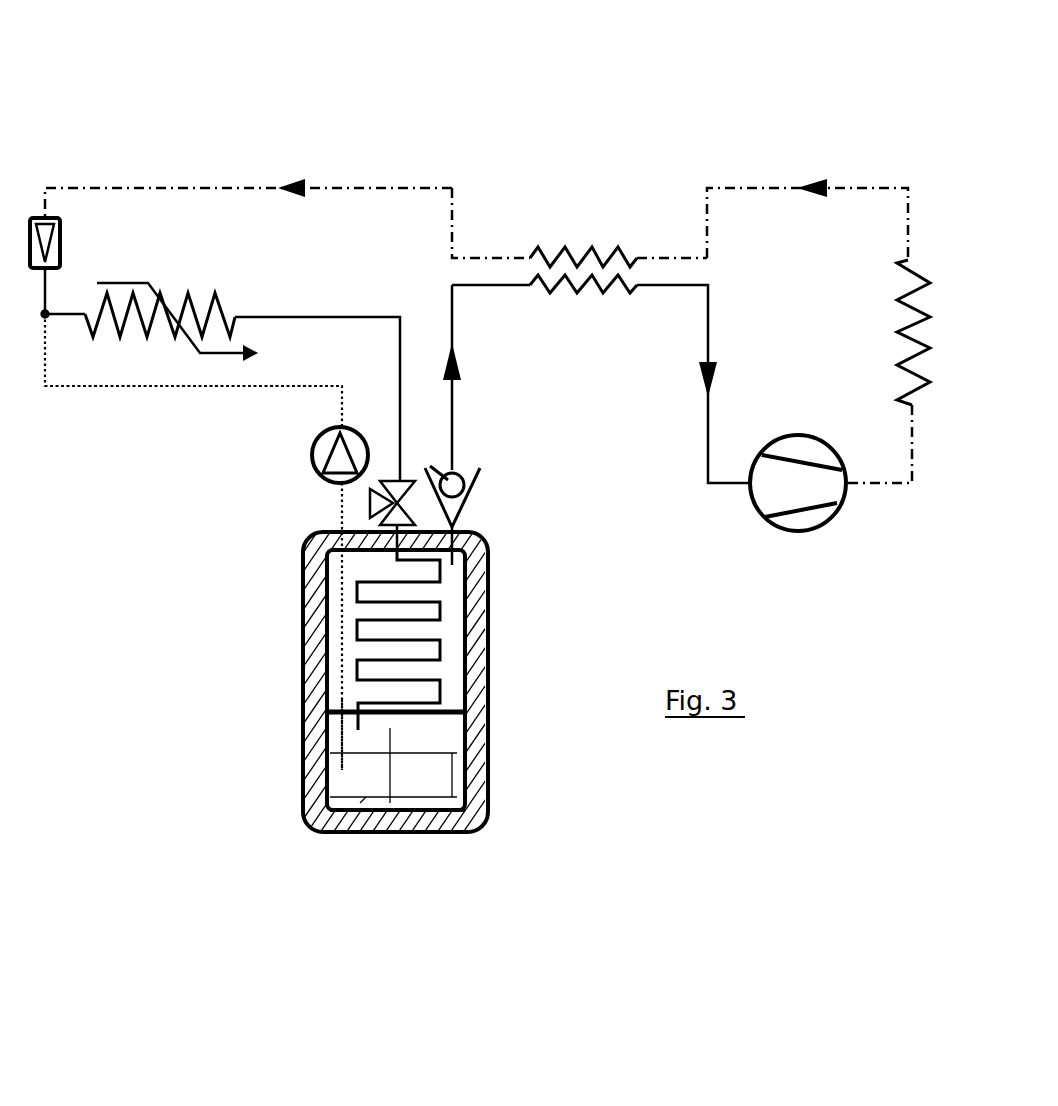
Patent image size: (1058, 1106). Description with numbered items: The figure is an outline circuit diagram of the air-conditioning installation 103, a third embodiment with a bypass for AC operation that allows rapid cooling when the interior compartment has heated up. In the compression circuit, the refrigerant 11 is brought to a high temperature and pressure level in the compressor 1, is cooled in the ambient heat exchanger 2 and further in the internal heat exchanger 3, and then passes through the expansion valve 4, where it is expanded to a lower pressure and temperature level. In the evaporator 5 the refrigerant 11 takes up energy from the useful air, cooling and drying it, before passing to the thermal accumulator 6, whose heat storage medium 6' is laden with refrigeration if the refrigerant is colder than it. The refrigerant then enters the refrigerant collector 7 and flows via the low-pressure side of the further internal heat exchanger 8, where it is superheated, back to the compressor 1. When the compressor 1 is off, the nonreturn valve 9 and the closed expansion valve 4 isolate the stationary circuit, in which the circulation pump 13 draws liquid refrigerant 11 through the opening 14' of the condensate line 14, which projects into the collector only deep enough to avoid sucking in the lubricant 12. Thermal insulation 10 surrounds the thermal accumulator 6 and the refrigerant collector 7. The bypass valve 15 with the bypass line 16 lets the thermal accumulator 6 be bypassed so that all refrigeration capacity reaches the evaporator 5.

The air-conditioning installation 103 is at (817, 95).
The compressor 1 is at (762, 530).
The ambient heat exchanger 2 is at (897, 332).
The internal heat exchanger 3 is at (567, 247).
The expansion valve 4 is at (60, 220).
The evaporator 5 is at (195, 307).
The thermal accumulator 6 is at (326, 668).
The heat storage medium 6' is at (313, 640).
The refrigerant collector 7 is at (472, 750).
The further internal heat exchanger 8 is at (600, 293).
The nonreturn valve 9 is at (473, 485).
The thermal insulation 10 is at (490, 597).
The refrigerant 11 is at (368, 777).
The lubricant 12 is at (342, 833).
The circulation pump 13 is at (312, 468).
The condensate line 14 is at (193, 454).
The opening of the condensate line 14' is at (285, 795).
The bypass valve 15 is at (405, 505).
The bypass line 16 is at (362, 500).